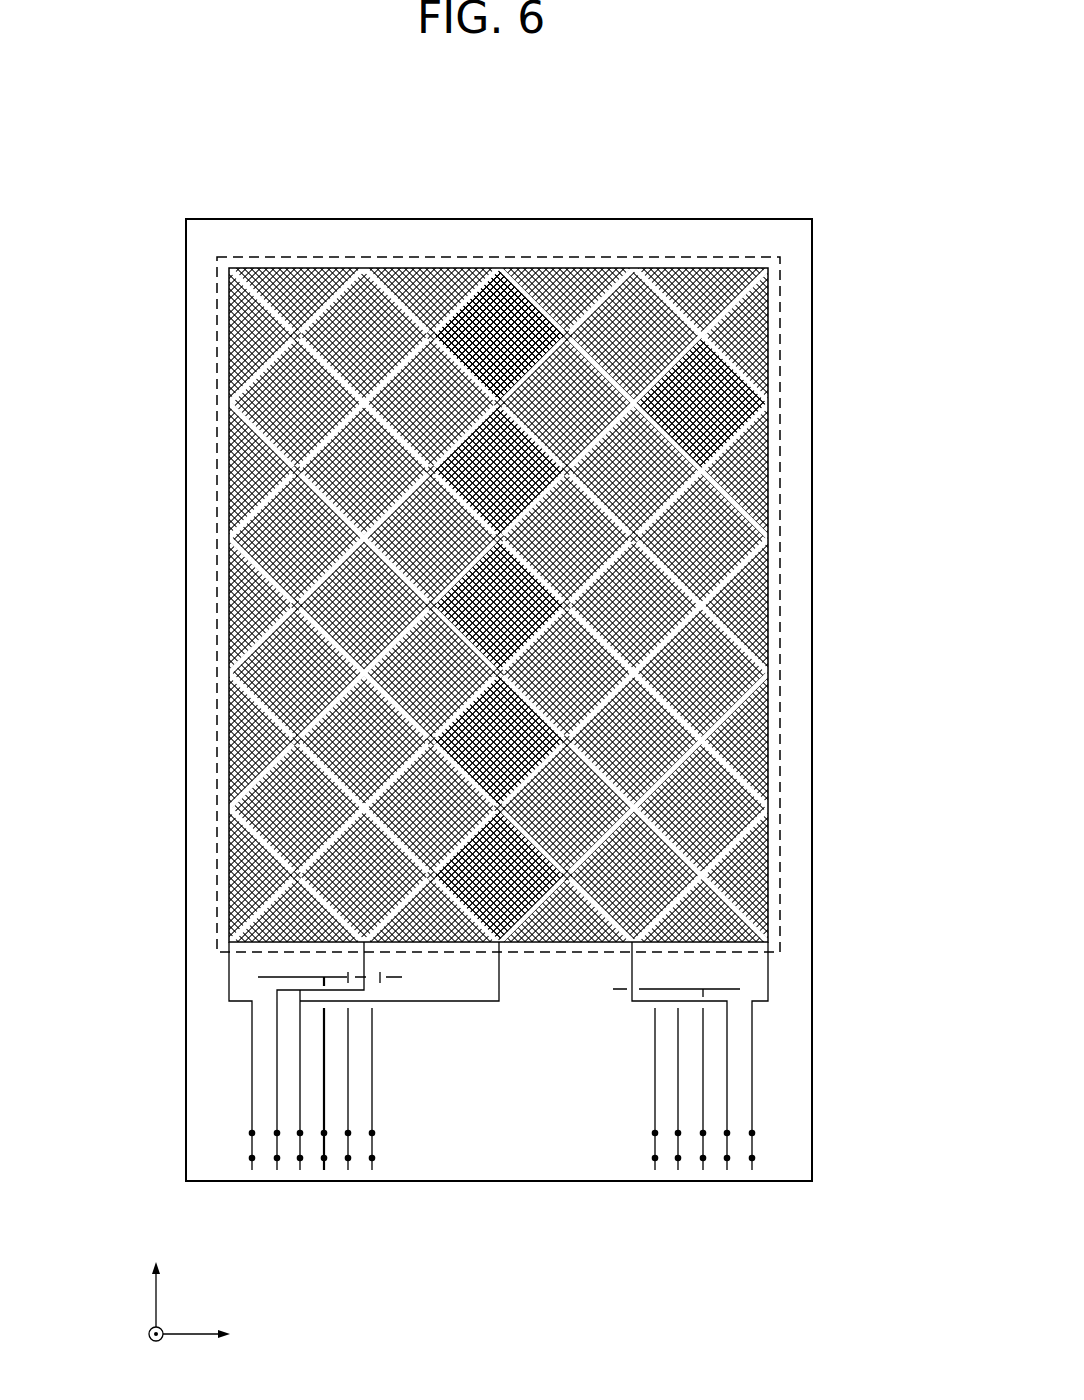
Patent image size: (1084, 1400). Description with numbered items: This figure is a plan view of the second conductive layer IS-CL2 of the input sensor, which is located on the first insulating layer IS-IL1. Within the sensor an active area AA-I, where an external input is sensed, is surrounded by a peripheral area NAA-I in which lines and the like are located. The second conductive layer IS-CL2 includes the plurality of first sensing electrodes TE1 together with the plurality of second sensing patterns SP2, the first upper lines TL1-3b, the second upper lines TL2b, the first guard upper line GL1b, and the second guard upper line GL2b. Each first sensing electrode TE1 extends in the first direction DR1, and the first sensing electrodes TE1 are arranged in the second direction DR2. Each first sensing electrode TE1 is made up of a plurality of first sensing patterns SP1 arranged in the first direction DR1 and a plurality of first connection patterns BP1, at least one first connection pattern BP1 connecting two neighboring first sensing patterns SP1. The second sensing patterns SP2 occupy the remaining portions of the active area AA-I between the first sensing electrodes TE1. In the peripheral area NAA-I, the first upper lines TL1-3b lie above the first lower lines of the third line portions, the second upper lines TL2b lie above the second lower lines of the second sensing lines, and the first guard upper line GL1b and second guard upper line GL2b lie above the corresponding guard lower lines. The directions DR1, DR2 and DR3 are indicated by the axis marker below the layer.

The first sensing electrode TE1 is at (612, 162).
The first sensing pattern SP1 is at (502, 283).
The first connection pattern BP1 is at (568, 330).
The second sensing pattern SP2 is at (735, 382).
The second conductive layer IS-CL2 is at (765, 160).
The peripheral area NAA-I is at (800, 526).
The active area AA-I is at (775, 575).
The first insulating layer IS-IL1 is at (812, 675).
The first upper line TL1-3b is at (228, 960).
The second upper line TL2b is at (347, 972).
The second guard upper line GL2b is at (295, 978).
The first guard upper line GL1b is at (324, 1067).
The first direction DR1 is at (222, 1334).
The second direction DR2 is at (161, 1280).
The third direction DR3 is at (161, 1350).